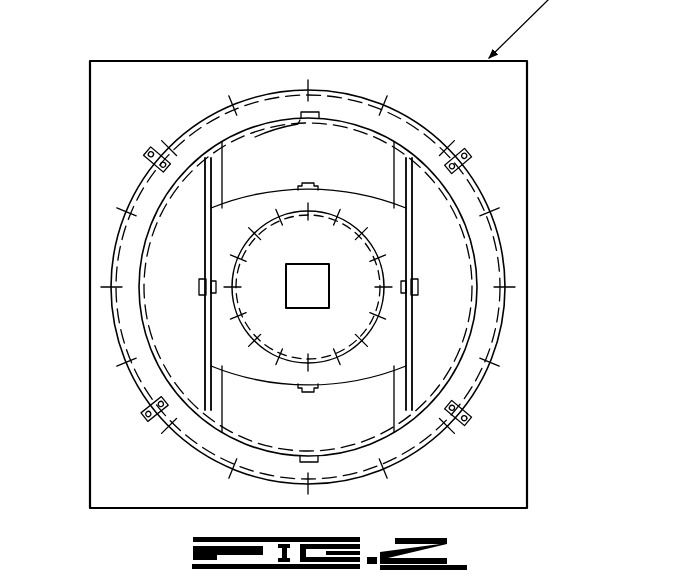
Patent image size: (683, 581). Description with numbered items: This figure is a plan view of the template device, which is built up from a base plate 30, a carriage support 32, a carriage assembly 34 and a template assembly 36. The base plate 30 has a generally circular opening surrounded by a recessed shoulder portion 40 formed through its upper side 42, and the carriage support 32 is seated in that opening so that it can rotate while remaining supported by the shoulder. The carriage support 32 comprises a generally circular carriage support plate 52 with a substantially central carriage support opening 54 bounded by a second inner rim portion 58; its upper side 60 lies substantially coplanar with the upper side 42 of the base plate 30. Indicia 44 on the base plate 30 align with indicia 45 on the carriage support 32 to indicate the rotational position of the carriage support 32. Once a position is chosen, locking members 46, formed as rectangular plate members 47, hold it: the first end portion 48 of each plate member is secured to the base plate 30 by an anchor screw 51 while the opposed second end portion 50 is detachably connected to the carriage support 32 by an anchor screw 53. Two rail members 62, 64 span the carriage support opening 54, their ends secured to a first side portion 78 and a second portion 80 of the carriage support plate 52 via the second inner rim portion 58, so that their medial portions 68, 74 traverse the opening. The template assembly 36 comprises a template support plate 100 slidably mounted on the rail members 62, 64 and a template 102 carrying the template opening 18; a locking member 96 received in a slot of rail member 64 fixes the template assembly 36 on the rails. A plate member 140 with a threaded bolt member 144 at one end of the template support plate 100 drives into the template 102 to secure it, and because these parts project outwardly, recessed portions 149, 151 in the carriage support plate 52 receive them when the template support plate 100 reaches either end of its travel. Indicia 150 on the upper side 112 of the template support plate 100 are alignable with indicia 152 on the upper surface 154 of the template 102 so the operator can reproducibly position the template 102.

The template opening 18 is at (311, 269).
The base plate 30 is at (507, 88).
The carriage support 32 is at (489, 248).
The carriage assembly 34 is at (413, 384).
The template assembly 36 is at (393, 343).
The recessed shoulder portion 40 is at (479, 192).
The upper side 42 is at (131, 129).
The indicia 44 is at (314, 75).
The indicia 45 is at (340, 90).
The locking members 46 is at (475, 148).
The plate members 47 is at (460, 152).
The first end portion 48 is at (468, 154).
The second end portion 50 is at (200, 415).
The anchor screw 51 is at (470, 162).
The carriage support plate 52 is at (262, 105).
The anchor screw 53 is at (167, 400).
The carriage support opening 54 is at (317, 158).
The second inner rim portion 58 is at (185, 183).
The upper side 60 is at (195, 132).
The rail member 62 is at (205, 313).
The rail member 64 is at (414, 283).
The medial portion 68 is at (205, 246).
The medial portion 74 is at (413, 255).
The first side portion 78 is at (245, 432).
The second portion 80 is at (388, 130).
The locking member 96 is at (428, 296).
The template support plate 100 is at (180, 196).
The template 102 is at (255, 280).
The upper side 112 is at (395, 231).
The plate member 140 is at (324, 386).
The threaded bolt member 144 is at (305, 393).
The recessed portion 149 is at (312, 452).
The indicia 150 is at (285, 210).
The recessed portion 151 is at (272, 136).
The indicia 152 is at (281, 223).
The upper surface 154 is at (320, 333).